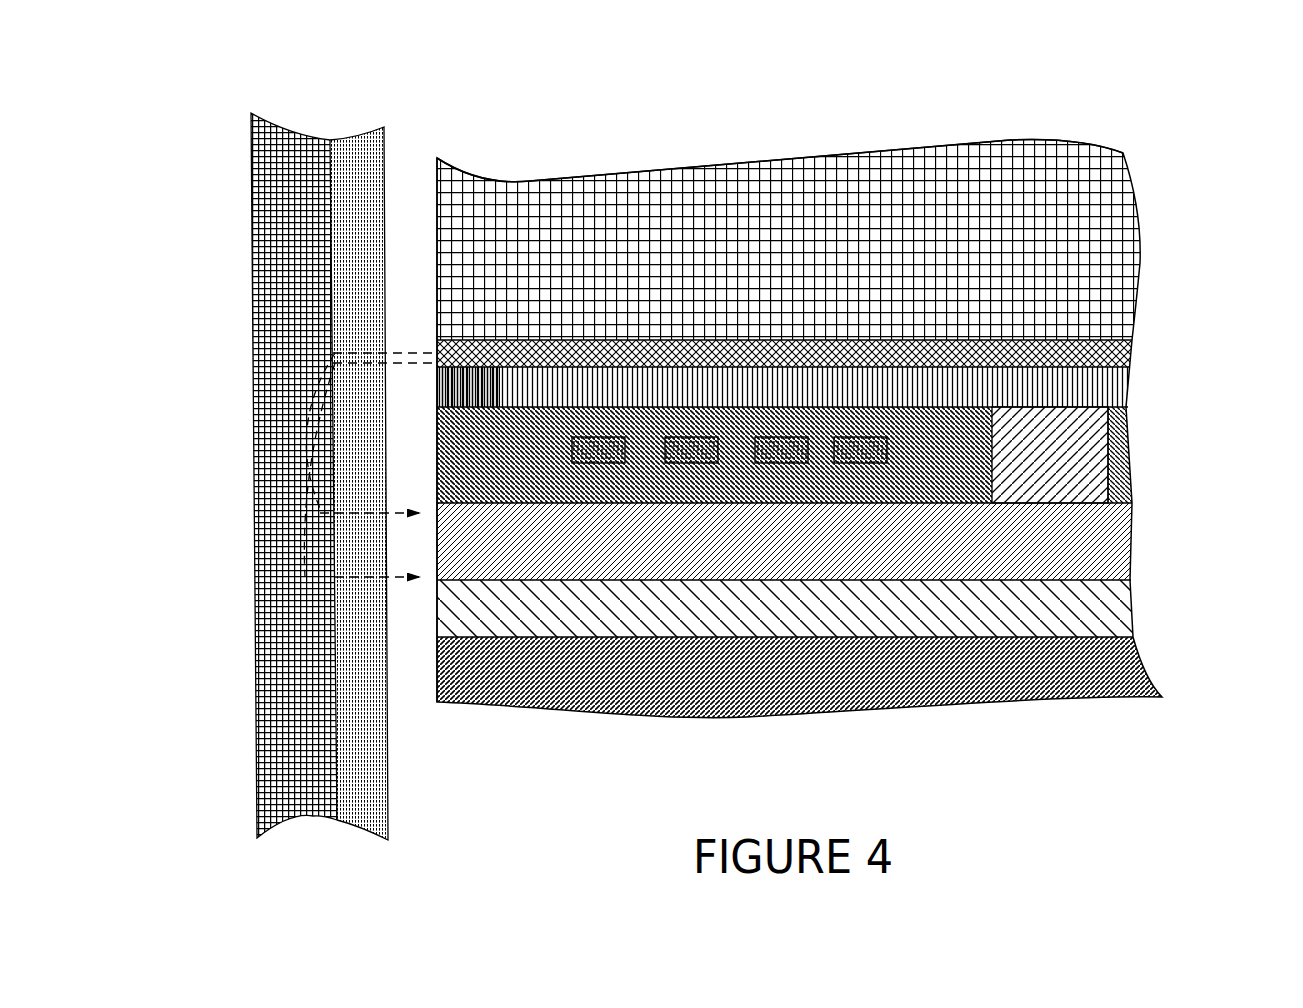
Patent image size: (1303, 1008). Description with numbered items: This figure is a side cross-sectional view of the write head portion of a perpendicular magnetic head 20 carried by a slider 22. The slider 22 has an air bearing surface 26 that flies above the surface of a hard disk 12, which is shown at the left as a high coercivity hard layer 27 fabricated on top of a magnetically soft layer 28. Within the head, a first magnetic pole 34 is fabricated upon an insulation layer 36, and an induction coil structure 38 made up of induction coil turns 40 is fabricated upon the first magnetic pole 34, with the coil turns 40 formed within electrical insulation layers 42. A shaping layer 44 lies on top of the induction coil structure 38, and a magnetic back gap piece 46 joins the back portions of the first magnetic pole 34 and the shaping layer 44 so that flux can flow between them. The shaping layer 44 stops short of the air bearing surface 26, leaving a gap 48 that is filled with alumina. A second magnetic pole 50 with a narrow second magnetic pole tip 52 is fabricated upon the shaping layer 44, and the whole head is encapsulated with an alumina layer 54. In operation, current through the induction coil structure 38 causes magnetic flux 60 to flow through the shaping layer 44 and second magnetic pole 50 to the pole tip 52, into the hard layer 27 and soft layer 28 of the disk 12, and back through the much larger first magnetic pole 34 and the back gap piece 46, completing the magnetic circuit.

The hard disk 12 is at (222, 288).
The perpendicular magnetic head 20 is at (588, 165).
The slider 22 is at (1013, 125).
The air bearing surface 26 is at (433, 216).
The hard layer 27 is at (357, 155).
The magnetically soft layer 28 is at (296, 150).
The first magnetic pole 34 is at (1098, 565).
The insulation layer 36 is at (1098, 608).
The induction coil structure 38 is at (809, 472).
The induction coil turns 40 is at (781, 465).
The electrical insulation layers 42 is at (968, 497).
The shaping layer 44 is at (1107, 385).
The magnetic back gap piece 46 is at (1070, 428).
The gap 48 is at (436, 378).
The second magnetic pole 50 is at (1125, 355).
The second magnetic pole tip 52 is at (433, 338).
The alumina layer 54 is at (927, 187).
The magnetic flux 60 is at (398, 583).